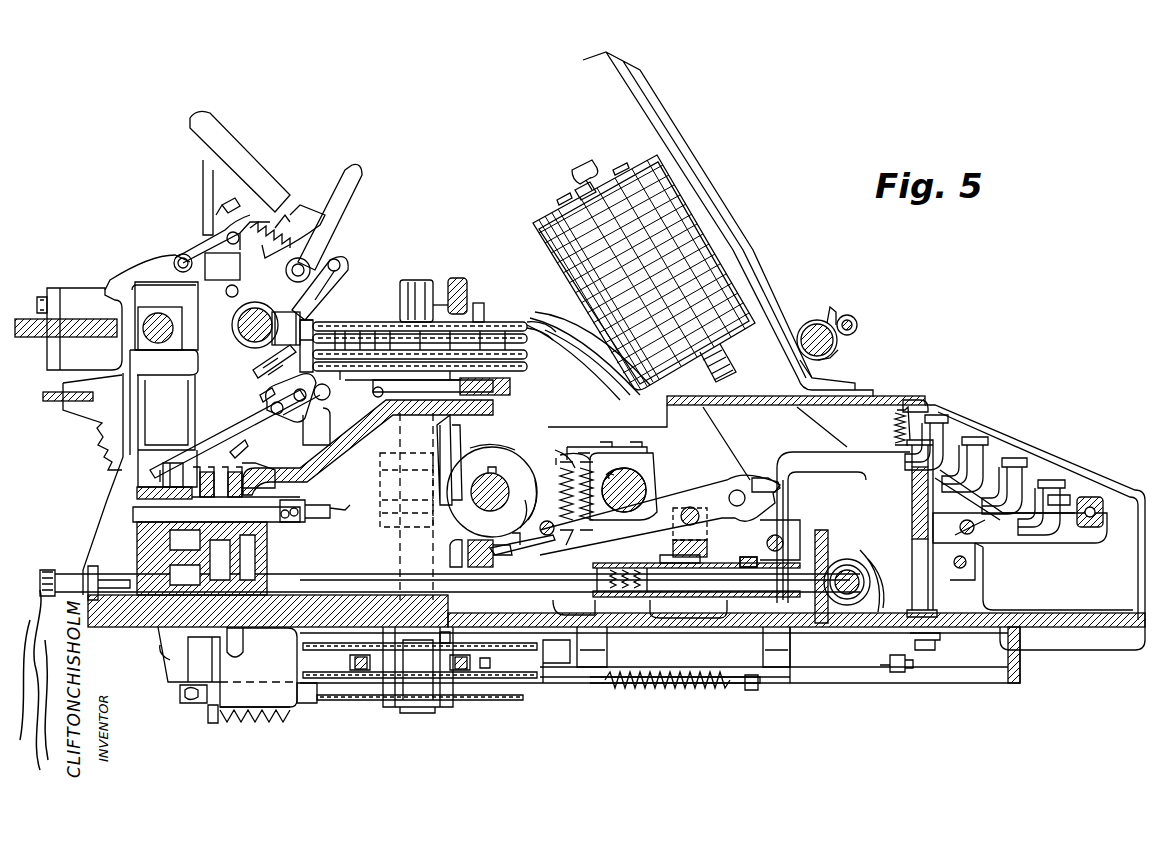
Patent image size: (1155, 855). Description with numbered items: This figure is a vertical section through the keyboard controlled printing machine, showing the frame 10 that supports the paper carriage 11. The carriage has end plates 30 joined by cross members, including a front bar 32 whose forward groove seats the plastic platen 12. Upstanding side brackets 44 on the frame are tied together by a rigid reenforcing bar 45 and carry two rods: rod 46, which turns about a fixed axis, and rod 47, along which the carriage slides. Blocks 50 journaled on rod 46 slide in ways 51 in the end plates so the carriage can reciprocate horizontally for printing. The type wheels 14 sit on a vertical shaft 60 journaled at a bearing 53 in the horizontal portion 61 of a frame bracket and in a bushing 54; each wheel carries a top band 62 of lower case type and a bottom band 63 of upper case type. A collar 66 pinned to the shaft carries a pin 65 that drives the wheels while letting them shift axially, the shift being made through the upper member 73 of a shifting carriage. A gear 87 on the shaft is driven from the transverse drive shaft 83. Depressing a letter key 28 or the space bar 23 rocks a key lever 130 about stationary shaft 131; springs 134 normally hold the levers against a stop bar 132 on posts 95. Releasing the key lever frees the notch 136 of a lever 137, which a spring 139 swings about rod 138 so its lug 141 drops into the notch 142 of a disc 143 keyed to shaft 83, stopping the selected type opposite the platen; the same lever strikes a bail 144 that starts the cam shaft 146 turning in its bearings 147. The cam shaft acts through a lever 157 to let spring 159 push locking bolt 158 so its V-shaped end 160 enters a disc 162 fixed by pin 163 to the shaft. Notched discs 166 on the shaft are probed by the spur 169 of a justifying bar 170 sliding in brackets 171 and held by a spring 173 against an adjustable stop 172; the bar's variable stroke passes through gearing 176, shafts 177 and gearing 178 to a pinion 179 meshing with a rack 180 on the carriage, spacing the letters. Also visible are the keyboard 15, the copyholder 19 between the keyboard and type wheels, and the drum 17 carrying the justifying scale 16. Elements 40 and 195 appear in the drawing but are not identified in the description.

The frame 10 is at (1068, 613).
The paper carriage 11 is at (272, 190).
The platen 12 is at (296, 340).
The type wheels 14 is at (512, 334).
The keyboard 15 is at (1010, 452).
The justifying scale 16 is at (548, 258).
The drum 17 is at (552, 222).
The copyholder 19 is at (812, 310).
The space key or bar 23 is at (1092, 497).
The letter key 28 is at (1060, 478).
The end plates 30 is at (221, 430).
The frame member or bar 32 is at (181, 256).
The handle lever 40 is at (328, 190).
The side brackets 44 is at (88, 296).
The reenforcing bar 45 is at (24, 319).
The rod 46 is at (112, 340).
The rod 47 is at (232, 320).
The blocks 50 is at (142, 345).
The ways 51 is at (160, 372).
The bearing 53 is at (460, 445).
The bushing 54 is at (393, 570).
The shaft 60 is at (427, 292).
The horizontally extending portion 61 is at (485, 410).
The top band 62 is at (495, 320).
The bottom bands 63 is at (537, 335).
The pin or rod 65 is at (480, 302).
The collar 66 is at (372, 396).
The upper member 73 is at (459, 278).
The shaft 83 is at (482, 476).
The gear 87 is at (378, 508).
The frame members or posts 95 is at (912, 516).
The key levers 130 is at (858, 460).
The stationary shaft 131 is at (785, 538).
The stop bar 132 is at (925, 402).
The springs 134 is at (895, 423).
The notch 136 is at (762, 478).
The levers 137 is at (722, 482).
The stationary rod 138 is at (690, 507).
The springs 139 is at (560, 468).
The lug 141 is at (470, 547).
The notch 142 is at (504, 489).
The disc 143 is at (498, 450).
The bail 144 is at (524, 520).
The cam shaft 146 is at (648, 475).
The bearings 147 is at (655, 460).
The lever 157 is at (195, 657).
The locking bolt 158 is at (212, 703).
The spring 159 is at (245, 722).
The V-shaped end 160 is at (308, 693).
The disc 162 is at (370, 697).
The pin 163 is at (452, 640).
The disc 166 is at (338, 672).
The spur 169 is at (556, 665).
The plunger or justifying bar 170 is at (625, 685).
The brackets 171 is at (592, 670).
The adjustable stop 172 is at (893, 675).
The spring 173 is at (680, 688).
The gearing 176 is at (832, 548).
The shafts 177 is at (290, 573).
The gearing 178 is at (160, 550).
The pinion 179 is at (137, 494).
The rack 180 is at (176, 463).
The wall 195 is at (790, 483).